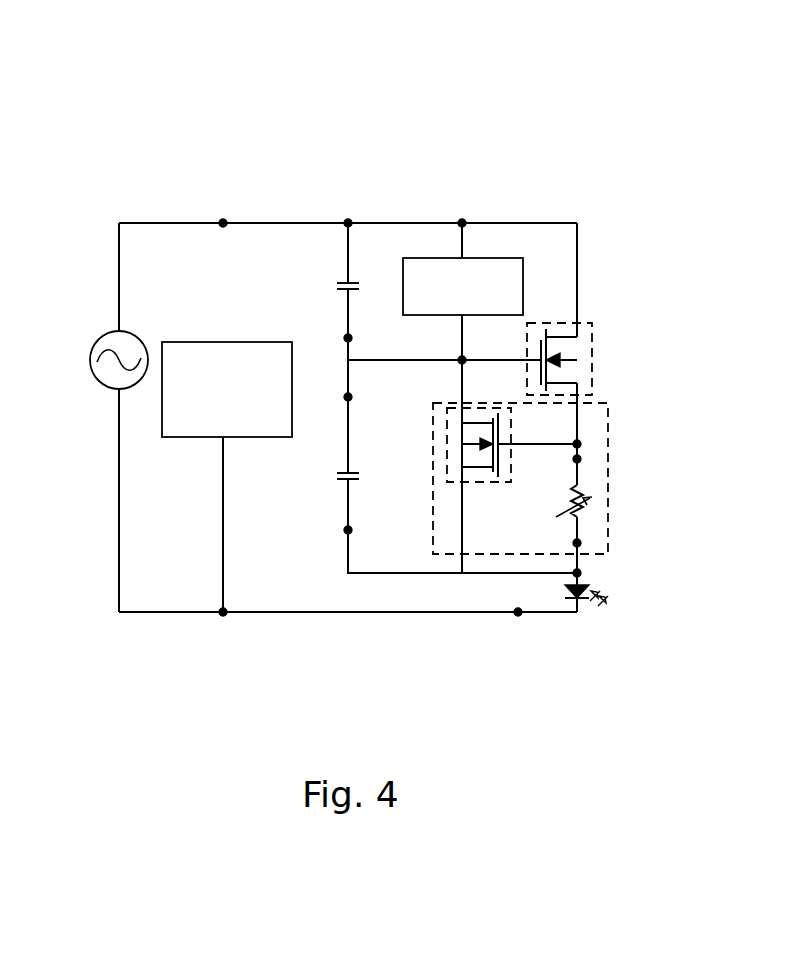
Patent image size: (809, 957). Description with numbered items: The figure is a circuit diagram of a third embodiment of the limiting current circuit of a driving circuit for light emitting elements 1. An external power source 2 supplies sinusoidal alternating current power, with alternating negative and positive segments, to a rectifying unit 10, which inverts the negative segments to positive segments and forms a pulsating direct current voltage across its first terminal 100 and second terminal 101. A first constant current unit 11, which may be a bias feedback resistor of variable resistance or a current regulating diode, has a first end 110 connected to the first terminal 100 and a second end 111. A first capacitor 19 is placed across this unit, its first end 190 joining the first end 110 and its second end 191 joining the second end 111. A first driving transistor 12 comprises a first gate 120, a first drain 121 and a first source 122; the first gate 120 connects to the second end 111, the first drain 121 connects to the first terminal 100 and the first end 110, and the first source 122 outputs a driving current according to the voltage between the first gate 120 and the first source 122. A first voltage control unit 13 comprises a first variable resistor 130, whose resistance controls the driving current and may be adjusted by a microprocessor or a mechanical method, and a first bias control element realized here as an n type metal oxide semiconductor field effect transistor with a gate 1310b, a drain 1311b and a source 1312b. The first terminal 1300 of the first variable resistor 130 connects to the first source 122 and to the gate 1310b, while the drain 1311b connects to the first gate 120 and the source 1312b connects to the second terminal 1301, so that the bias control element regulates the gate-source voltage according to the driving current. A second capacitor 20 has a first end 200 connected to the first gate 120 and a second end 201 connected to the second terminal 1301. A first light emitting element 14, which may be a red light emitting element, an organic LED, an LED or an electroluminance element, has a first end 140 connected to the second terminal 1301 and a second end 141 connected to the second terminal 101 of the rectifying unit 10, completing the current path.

The driving circuit for light emitting elements 1 is at (670, 93).
The external power source 2 is at (111, 338).
The rectifying unit 10 is at (215, 342).
The first terminal 100 is at (224, 222).
The second terminal 101 is at (222, 614).
The first capacitor 19 is at (337, 281).
The first end 190 is at (349, 222).
The second end 191 is at (348, 338).
The second capacitor 20 is at (336, 480).
The first end 200 is at (348, 397).
The second end 201 is at (346, 532).
The first constant current unit 11 is at (495, 260).
The first end 110 is at (463, 222).
The second end 111 is at (461, 360).
The first driving transistor 12 is at (557, 316).
The first gate 120 is at (541, 355).
The first drain 121 is at (543, 335).
The first source 122 is at (541, 385).
The first voltage control unit 13 is at (608, 407).
The gate 1310b is at (499, 447).
The drain 1311b is at (496, 423).
The source 1312b is at (494, 468).
The first terminal 1300 is at (582, 445).
The first variable resistor 130 is at (580, 486).
The second terminal 1301 is at (581, 542).
The first light emitting element 14 is at (592, 587).
The first end 140 is at (581, 572).
The second end 141 is at (516, 616).